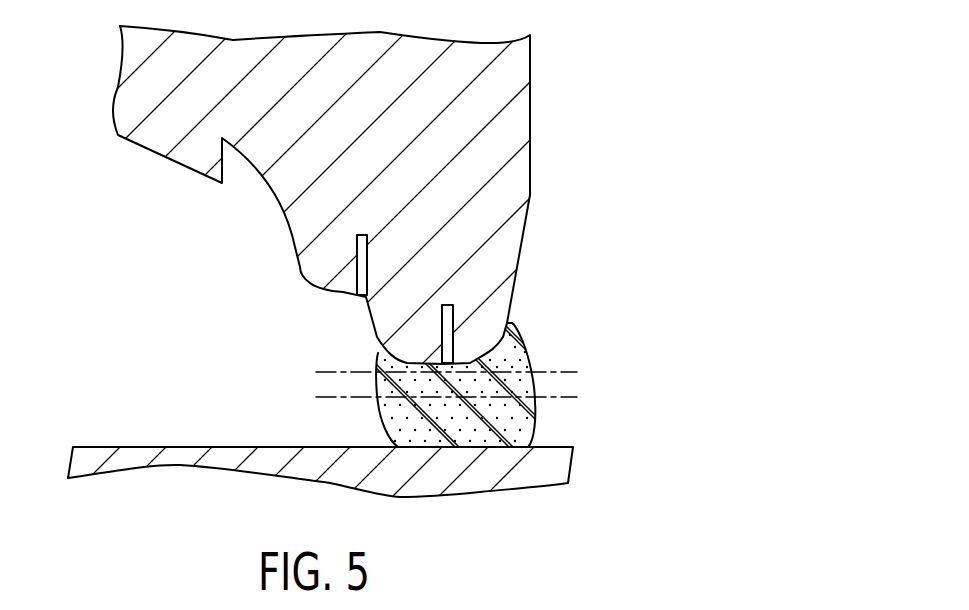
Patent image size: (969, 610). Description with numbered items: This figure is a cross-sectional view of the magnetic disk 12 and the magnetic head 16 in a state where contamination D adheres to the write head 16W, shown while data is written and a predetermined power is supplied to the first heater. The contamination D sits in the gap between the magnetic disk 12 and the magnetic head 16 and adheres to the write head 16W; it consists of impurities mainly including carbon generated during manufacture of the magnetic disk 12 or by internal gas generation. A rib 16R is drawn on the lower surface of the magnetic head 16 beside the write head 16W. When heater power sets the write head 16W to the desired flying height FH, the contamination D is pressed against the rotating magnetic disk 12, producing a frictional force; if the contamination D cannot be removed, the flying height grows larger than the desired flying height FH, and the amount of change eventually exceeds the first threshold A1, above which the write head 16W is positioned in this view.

The magnetic head 16 is at (548, 107).
The rib of slider 16R is at (357, 268).
The write head 16W is at (455, 332).
The contamination D is at (397, 423).
The first threshold A1 is at (548, 372).
The flying height FH is at (548, 397).
The magnetic disk 12 is at (517, 480).